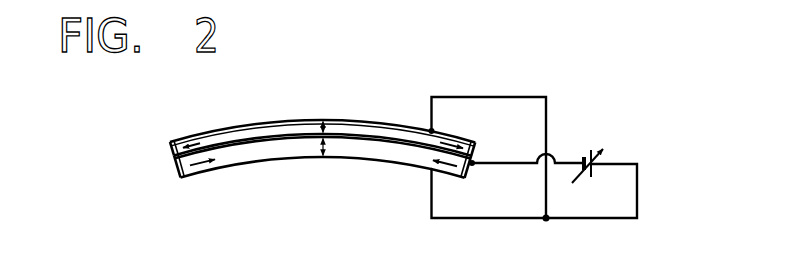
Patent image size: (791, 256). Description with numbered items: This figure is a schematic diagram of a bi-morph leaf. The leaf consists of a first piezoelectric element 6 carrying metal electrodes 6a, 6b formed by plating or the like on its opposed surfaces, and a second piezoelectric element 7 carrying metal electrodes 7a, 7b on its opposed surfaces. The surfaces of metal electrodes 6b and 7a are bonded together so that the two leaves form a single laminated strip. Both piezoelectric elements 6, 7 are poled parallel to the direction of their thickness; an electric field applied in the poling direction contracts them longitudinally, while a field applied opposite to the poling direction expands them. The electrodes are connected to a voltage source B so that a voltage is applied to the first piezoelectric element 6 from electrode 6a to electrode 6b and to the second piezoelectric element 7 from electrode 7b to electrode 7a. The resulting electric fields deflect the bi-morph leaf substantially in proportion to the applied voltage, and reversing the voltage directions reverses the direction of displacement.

The first piezoelectric element 6 is at (292, 121).
The metal electrode 6a is at (207, 132).
The metal electrode 6b is at (171, 151).
The second piezoelectric element 7 is at (294, 158).
The metal electrode 7a is at (178, 177).
The metal electrode 7b is at (219, 168).
The voltage source B is at (587, 146).